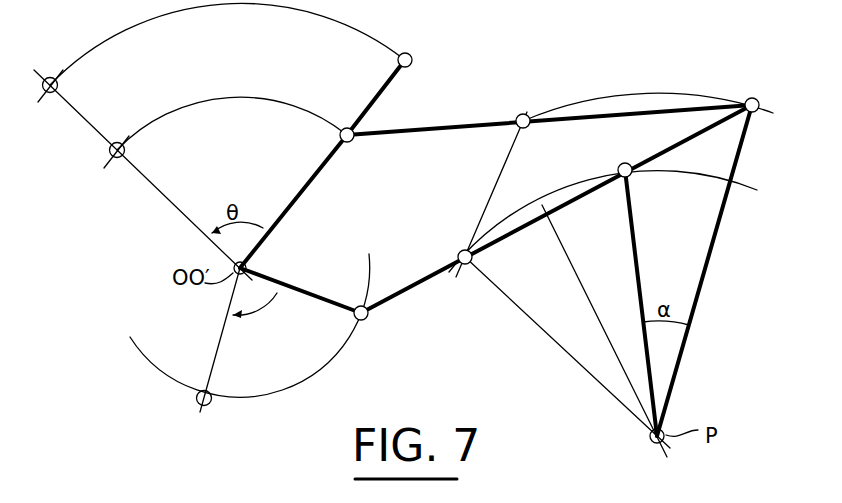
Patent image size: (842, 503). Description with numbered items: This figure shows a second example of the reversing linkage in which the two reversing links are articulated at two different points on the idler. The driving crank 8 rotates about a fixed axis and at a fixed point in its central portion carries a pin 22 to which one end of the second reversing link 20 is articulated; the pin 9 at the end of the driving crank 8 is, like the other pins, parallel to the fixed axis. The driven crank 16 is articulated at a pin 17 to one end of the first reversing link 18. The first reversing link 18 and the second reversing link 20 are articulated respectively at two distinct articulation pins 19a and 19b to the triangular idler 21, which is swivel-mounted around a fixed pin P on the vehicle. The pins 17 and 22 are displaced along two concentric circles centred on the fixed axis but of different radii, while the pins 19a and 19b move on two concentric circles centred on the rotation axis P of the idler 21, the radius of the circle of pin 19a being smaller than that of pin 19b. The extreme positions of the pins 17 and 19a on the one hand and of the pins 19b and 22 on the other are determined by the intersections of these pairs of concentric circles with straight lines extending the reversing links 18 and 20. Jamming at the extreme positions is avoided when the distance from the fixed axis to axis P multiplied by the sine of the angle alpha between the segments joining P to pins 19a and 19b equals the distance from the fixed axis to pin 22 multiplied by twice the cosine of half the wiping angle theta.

The driving crank 8 is at (293, 200).
The pin 9 is at (415, 60).
The driven crank 16 is at (320, 303).
The pin 17 is at (363, 320).
The first reversing link 18 is at (436, 282).
The articulation pin 19a is at (622, 163).
The articulation pin 19b is at (748, 100).
The second reversing link 20 is at (428, 126).
The idler 21 is at (694, 253).
The pin 22 is at (343, 128).